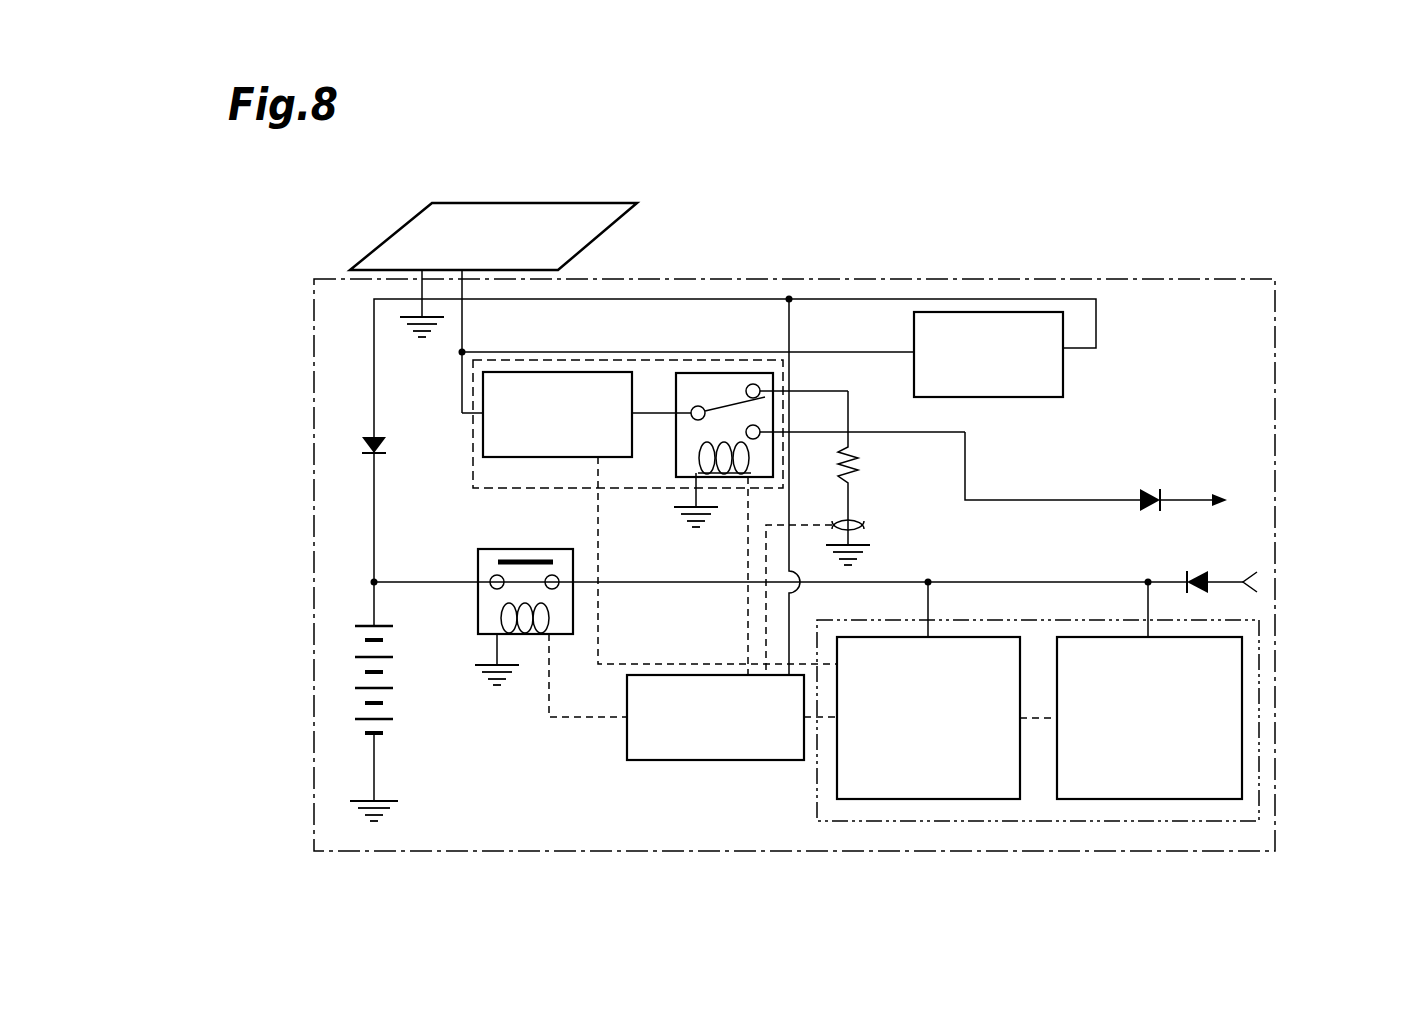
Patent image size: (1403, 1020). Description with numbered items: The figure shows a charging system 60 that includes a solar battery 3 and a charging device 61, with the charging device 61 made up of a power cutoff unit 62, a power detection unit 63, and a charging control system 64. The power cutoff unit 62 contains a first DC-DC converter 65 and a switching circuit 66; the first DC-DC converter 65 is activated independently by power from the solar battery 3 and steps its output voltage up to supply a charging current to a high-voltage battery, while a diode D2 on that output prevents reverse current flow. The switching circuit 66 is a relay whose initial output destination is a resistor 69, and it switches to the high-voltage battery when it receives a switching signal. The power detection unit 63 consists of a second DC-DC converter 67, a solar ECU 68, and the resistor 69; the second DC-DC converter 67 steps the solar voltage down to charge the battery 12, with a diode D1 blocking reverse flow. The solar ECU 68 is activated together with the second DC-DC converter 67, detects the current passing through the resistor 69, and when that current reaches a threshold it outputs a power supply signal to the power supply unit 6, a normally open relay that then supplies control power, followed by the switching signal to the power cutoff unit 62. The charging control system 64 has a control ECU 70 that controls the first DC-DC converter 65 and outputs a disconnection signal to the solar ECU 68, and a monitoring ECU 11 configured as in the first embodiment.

The solar battery 3 is at (516, 203).
The power supply unit 6 is at (558, 549).
The monitoring ECU 11 is at (1138, 799).
The battery 12 is at (363, 626).
The charging system 60 is at (1283, 178).
The charging device 61 is at (1168, 279).
The power cutoff unit 62 is at (677, 360).
The power detection unit 63 is at (831, 569).
The charging control system 64 is at (1259, 703).
The first DC-DC converter 65 is at (513, 458).
The switching circuit 66 is at (673, 455).
The second DC-DC converter 67 is at (1063, 372).
The solar ECU 68 is at (710, 760).
The resistor 69 is at (858, 452).
The control ECU 70 is at (862, 528).
The diode D1 is at (388, 447).
The diode D2 is at (1138, 493).